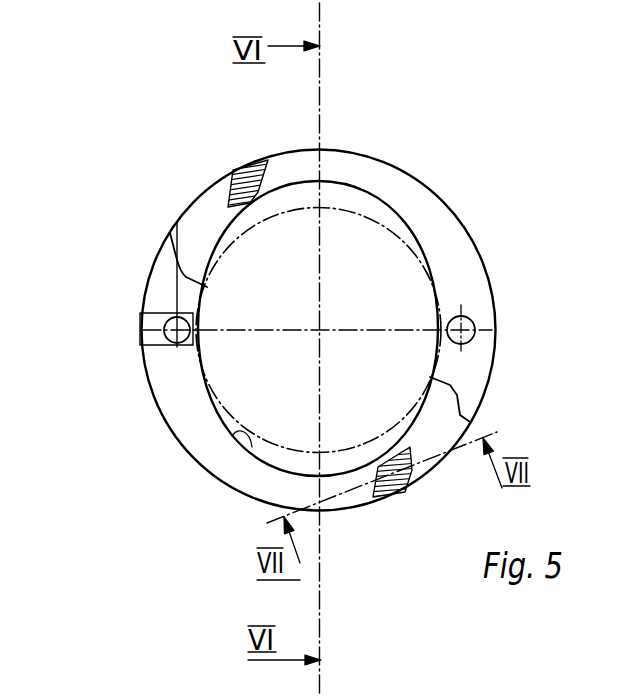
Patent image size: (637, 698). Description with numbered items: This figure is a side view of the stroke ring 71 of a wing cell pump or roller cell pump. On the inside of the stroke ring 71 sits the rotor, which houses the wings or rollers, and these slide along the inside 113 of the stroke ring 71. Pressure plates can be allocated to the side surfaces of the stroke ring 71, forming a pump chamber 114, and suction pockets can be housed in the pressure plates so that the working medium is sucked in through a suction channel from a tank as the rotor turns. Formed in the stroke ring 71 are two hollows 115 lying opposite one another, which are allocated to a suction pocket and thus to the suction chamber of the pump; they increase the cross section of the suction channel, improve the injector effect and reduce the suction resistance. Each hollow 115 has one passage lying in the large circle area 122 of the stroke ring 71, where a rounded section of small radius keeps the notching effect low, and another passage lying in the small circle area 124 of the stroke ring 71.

The stroke ring 71 is at (432, 188).
The inside of the stroke ring 113 is at (248, 449).
The pump chamber 114 is at (352, 207).
The hollows 115 is at (202, 213).
The large circle area 122 is at (283, 165).
The small circle area 124 is at (193, 355).